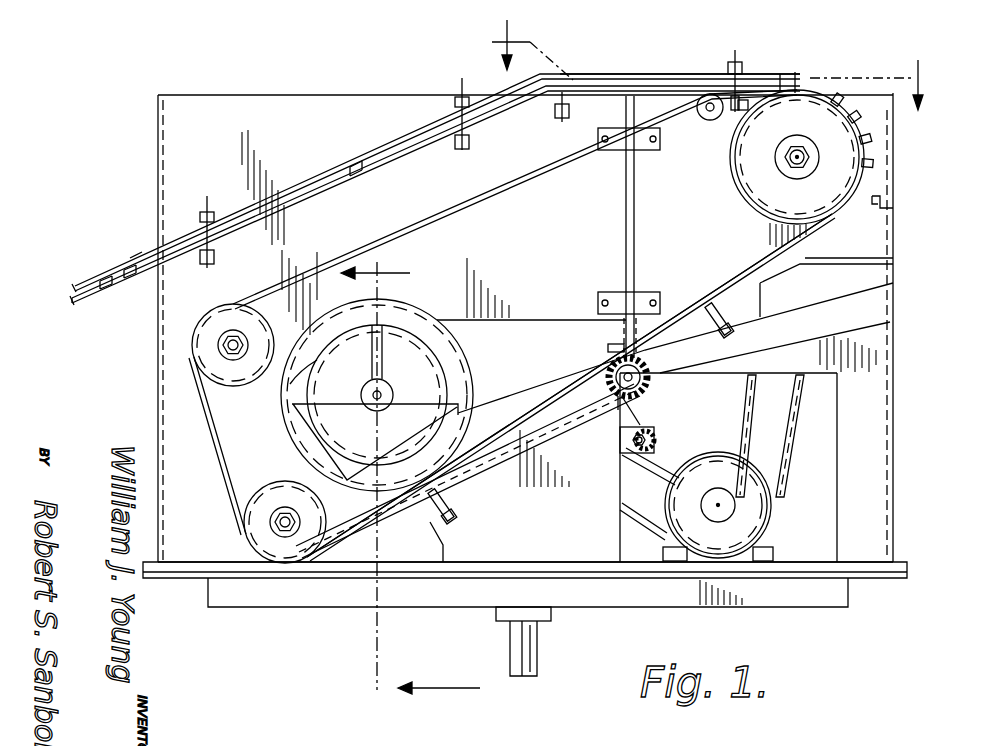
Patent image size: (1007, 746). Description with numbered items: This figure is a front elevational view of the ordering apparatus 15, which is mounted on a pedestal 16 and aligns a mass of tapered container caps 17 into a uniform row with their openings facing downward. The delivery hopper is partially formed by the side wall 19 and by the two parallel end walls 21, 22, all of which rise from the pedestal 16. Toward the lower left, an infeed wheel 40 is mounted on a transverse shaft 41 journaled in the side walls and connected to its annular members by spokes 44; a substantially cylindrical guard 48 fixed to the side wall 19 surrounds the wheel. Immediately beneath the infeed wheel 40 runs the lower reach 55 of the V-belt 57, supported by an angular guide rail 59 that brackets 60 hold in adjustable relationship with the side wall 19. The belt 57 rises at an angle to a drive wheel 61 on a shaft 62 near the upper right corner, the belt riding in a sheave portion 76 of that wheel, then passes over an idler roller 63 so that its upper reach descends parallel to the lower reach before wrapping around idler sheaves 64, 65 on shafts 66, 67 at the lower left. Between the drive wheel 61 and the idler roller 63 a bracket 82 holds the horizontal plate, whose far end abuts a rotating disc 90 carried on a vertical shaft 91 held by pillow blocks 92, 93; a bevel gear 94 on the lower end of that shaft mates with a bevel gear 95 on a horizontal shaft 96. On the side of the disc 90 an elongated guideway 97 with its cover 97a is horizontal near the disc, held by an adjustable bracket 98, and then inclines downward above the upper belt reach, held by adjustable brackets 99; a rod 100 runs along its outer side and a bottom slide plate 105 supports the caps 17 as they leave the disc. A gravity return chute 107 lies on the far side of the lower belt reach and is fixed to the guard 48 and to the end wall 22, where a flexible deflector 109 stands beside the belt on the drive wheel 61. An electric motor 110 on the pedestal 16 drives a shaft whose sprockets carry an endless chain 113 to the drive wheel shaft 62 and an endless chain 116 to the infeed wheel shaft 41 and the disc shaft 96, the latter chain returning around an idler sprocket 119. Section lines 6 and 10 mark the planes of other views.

The ordering apparatus 15 is at (340, 84).
The side wall 19 is at (225, 96).
The end wall 21 is at (158, 125).
The end wall 22 is at (893, 185).
The guideway 97 is at (384, 140).
The cover 97a is at (135, 260).
The disc 90 is at (605, 75).
The rod 100 is at (72, 290).
The bottom slide plate 105 is at (72, 303).
The container caps 17 is at (362, 172).
The adjustable brackets 99 is at (462, 148).
The adjustable bracket 98 is at (733, 50).
The section line 10- 10 is at (715, 60).
The bracket 82 is at (745, 105).
The idler roller 63 is at (712, 120).
The sheave portion 76 is at (748, 172).
The drive wheel 61 is at (775, 187).
The shaft 62 is at (804, 165).
The deflector 109 is at (893, 208).
The idler sheave 64 is at (200, 334).
The shaft 66 is at (220, 346).
The idler sheave 65 is at (262, 508).
The shaft 67 is at (276, 522).
The infeed wheel 40 is at (445, 300).
The transverse shaft 41 is at (372, 393).
The spokes 44 is at (384, 345).
The guard 48 is at (290, 386).
The section line 6- 6 is at (410, 483).
The V-belt 57 is at (748, 267).
The lower reach 55 is at (342, 534).
The guide rail 59 is at (450, 474).
The brackets 60 is at (455, 518).
The gravity return chute 107 is at (718, 357).
The vertical shaft 91 is at (626, 200).
The pillow block 92 is at (612, 151).
The pillow block 93 is at (612, 292).
The bevel gear 94 is at (622, 335).
The bevel gear 95 is at (610, 348).
The horizontal shaft 96 is at (650, 380).
The idler sprocket 119 is at (657, 436).
The electric motor 110 is at (745, 480).
The endless chain 116 is at (622, 508).
The endless chain 113 is at (800, 425).
The pedestal 16 is at (532, 662).